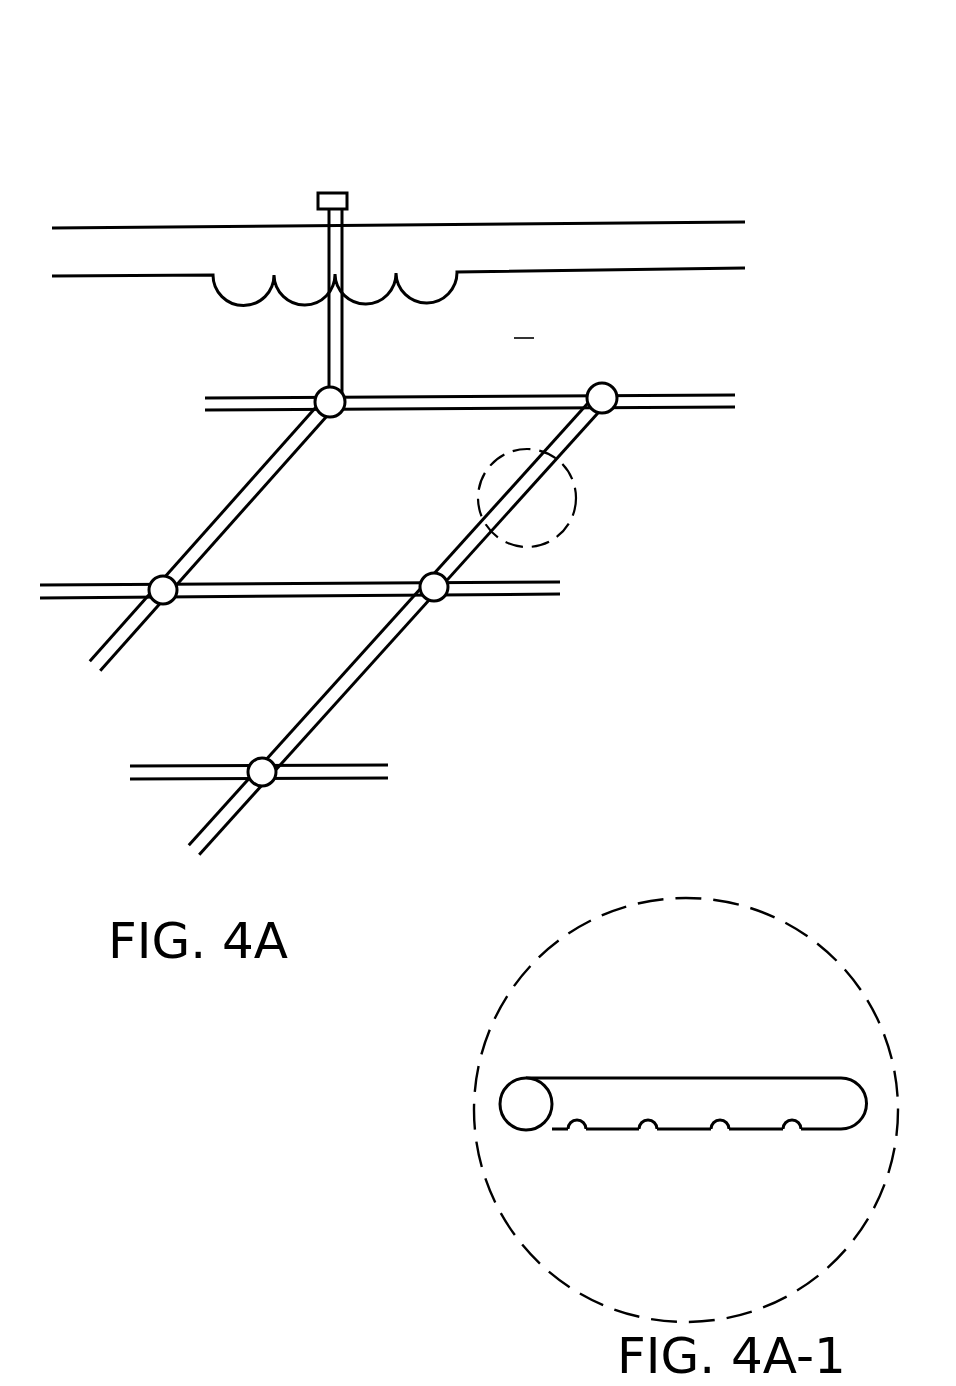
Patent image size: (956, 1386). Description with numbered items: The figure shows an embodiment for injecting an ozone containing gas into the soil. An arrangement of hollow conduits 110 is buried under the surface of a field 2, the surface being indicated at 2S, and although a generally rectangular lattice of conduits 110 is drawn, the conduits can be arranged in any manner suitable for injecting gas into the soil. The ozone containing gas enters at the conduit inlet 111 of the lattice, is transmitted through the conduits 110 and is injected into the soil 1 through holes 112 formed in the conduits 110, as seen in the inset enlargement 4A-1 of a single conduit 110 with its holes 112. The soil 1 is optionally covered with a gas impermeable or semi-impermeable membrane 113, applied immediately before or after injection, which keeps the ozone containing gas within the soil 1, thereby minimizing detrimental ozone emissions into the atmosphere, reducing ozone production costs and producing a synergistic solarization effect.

In FIG. 4A, the field 2 is at (442, 162).
In FIG. 4A, the ceiling surface 2S is at (737, 268).
In FIG. 4A, the gas impermeable or semi-impermeable membrane 113 is at (642, 222).
In FIG. 4A, the soil 1 is at (524, 326).
In FIG. 4A, the conduit inlet 111 is at (318, 200).
In FIG. 4A, the hollow conduits 110 is at (268, 468).
In FIG. 4A-1, the hollow conduits 110 is at (760, 1078).
In FIG. 4A-1, the holes 112 is at (792, 1132).
In FIG. 4A, the detail region 4A-1 is at (575, 517).